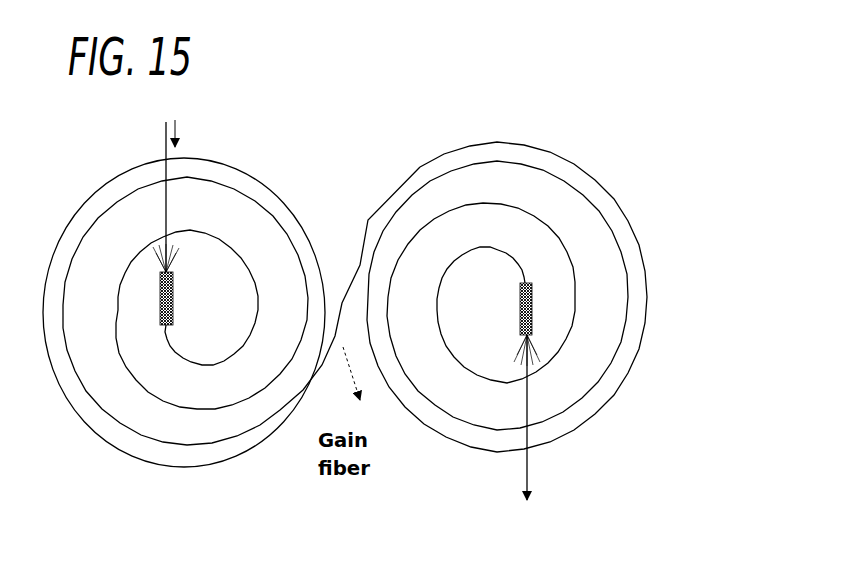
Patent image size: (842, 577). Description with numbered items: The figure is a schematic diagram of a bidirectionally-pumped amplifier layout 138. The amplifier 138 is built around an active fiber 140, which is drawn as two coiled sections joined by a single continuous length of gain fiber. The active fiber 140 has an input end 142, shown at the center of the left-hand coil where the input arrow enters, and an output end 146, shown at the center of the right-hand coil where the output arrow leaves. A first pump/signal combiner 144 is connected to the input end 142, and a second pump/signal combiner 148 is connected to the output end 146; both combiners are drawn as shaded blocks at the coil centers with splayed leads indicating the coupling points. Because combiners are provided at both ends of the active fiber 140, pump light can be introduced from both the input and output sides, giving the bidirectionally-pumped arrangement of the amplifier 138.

The bidirectionally-pumped amplifier layout 138 is at (608, 155).
The active fiber 140 is at (643, 250).
The input end 142 is at (298, 132).
The first pump/signal combiner 144 is at (168, 297).
The output end 146 is at (667, 490).
The second pump/signal combiner 148 is at (518, 309).